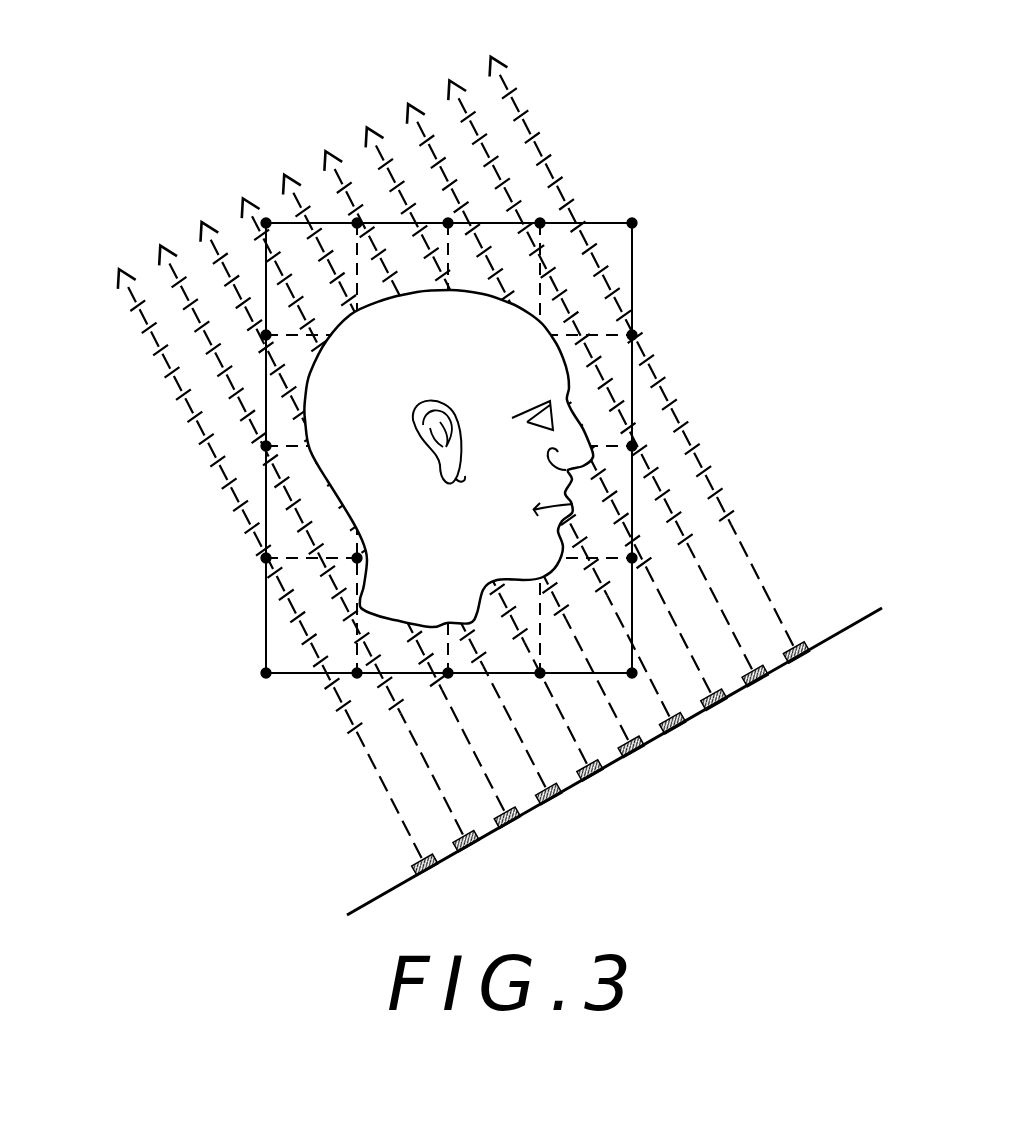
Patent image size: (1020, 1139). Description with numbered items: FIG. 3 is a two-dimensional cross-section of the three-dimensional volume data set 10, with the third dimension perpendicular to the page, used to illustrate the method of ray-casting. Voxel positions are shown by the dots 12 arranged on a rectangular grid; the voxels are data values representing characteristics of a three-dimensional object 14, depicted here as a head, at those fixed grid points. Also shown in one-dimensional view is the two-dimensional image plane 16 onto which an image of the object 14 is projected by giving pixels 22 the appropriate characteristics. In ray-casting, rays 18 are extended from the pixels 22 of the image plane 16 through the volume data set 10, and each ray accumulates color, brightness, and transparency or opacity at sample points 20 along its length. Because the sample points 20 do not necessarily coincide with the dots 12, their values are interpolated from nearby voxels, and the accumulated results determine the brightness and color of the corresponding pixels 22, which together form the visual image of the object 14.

The volume data set 10 is at (618, 221).
The dots 12 is at (266, 559).
The three-dimensional object 14 is at (439, 353).
The image plane 16 is at (862, 613).
The rays 18 is at (752, 561).
The sample points 20 is at (520, 83).
The pixels 22 is at (434, 874).